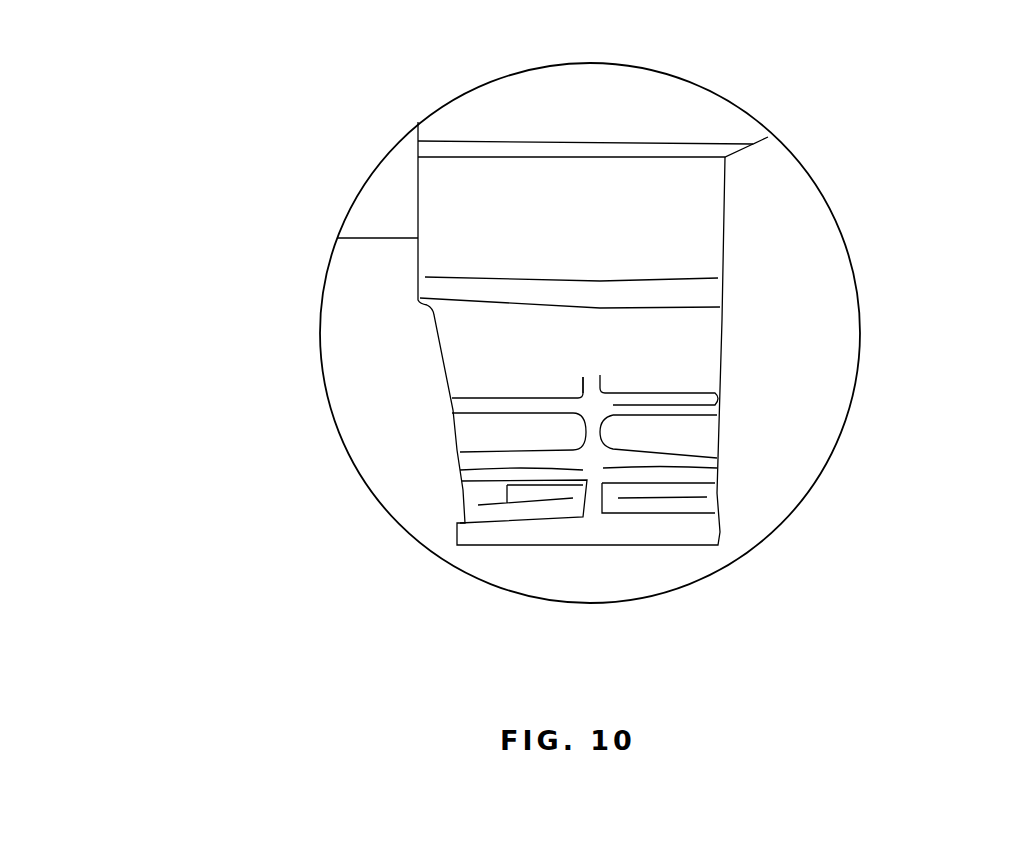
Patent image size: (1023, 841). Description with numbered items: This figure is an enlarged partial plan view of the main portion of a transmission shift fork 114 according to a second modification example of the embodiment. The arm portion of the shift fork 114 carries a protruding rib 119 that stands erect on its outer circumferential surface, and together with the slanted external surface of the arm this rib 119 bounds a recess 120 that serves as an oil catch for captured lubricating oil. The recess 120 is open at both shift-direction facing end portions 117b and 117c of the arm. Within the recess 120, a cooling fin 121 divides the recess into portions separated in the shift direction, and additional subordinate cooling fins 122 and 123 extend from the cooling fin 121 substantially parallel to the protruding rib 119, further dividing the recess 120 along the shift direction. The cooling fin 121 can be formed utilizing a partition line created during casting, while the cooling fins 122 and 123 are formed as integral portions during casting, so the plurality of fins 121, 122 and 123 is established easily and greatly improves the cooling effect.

The shift fork 114 is at (735, 84).
The shift-direction facing end portion 117b is at (417, 295).
The shift-direction facing end portion 117c is at (725, 272).
The protruding rib 119 is at (638, 533).
The recess 120 is at (510, 393).
The cooling fin 121 is at (595, 495).
The additional cooling fin 122 is at (492, 464).
The additional cooling fin 123 is at (470, 408).